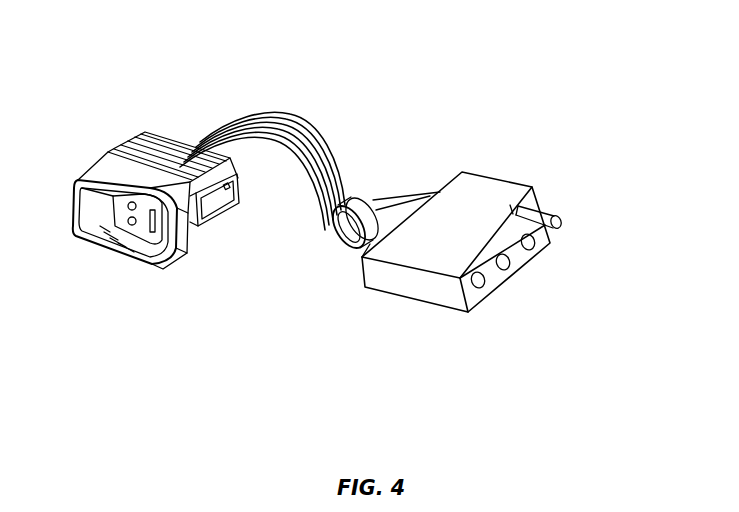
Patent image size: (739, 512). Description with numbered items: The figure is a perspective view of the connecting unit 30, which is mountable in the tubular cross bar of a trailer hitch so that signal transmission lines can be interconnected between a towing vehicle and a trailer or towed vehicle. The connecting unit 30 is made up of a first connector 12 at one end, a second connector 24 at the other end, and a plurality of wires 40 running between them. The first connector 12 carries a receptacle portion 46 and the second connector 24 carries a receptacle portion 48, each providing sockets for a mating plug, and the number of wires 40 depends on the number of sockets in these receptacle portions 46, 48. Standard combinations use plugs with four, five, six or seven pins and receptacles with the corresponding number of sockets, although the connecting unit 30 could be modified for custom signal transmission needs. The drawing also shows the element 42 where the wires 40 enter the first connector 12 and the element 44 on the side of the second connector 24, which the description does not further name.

The connecting unit 30 is at (433, 66).
The second connector 24 is at (128, 140).
The receptacle portion 48 is at (102, 247).
The latch 44 is at (182, 253).
The wires 40 is at (348, 122).
The strain relief collar 42 is at (440, 187).
The first connector 12 is at (492, 192).
The receptacle portion 46 is at (506, 264).